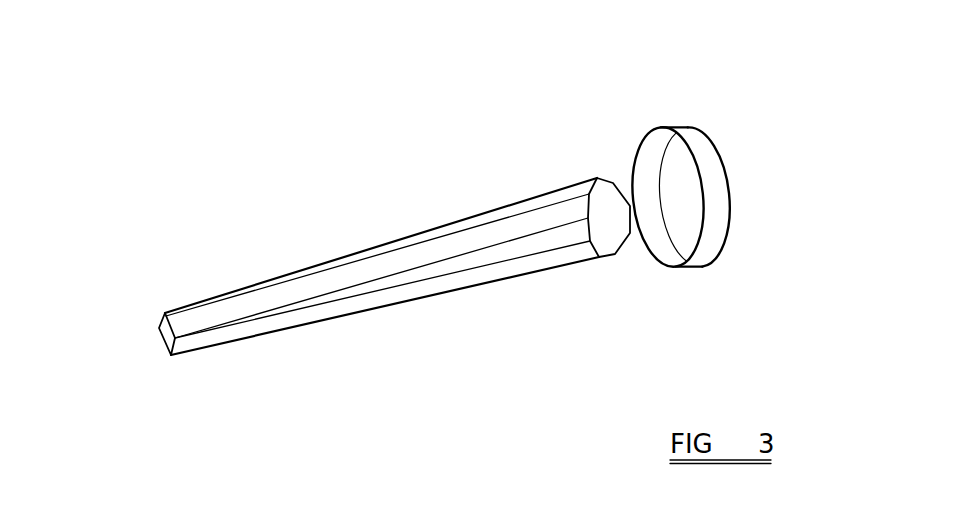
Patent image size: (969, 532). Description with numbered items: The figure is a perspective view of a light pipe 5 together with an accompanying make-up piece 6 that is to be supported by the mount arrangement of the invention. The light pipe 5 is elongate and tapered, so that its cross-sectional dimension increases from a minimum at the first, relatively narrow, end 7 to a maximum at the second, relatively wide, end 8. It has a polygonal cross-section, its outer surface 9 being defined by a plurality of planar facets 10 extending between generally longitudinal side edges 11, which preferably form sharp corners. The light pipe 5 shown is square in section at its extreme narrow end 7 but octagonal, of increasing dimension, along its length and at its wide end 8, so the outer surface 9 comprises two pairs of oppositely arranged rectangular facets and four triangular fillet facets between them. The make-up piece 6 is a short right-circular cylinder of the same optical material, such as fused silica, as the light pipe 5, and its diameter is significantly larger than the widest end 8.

The light pipe 5 is at (351, 253).
The make-up piece 6 is at (713, 150).
The first, relatively narrow, end 7 is at (163, 312).
The second, relatively wide, end 8 is at (608, 172).
The outer surface 9 is at (372, 300).
The planar facets 10 is at (265, 298).
The side edges 11 is at (462, 222).